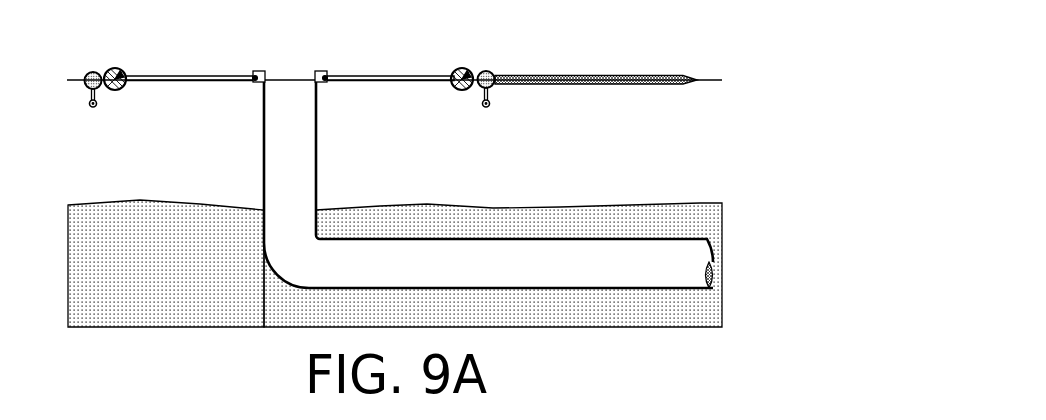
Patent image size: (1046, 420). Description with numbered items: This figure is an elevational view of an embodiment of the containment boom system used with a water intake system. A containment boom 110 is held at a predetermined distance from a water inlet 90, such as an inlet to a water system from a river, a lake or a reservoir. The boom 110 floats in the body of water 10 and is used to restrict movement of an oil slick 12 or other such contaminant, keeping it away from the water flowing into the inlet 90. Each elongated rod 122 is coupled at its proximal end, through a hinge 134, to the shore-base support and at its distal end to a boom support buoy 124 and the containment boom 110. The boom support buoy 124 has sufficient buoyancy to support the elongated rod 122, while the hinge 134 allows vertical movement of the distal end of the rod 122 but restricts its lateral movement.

The body of water 10 is at (712, 80).
The oil slick 12 is at (538, 75).
The water inlet 90 is at (316, 163).
The containment boom 110 is at (93, 71).
The elongated rod 122 is at (203, 76).
The boom support buoy 124 is at (114, 68).
The hinge 134 is at (259, 70).